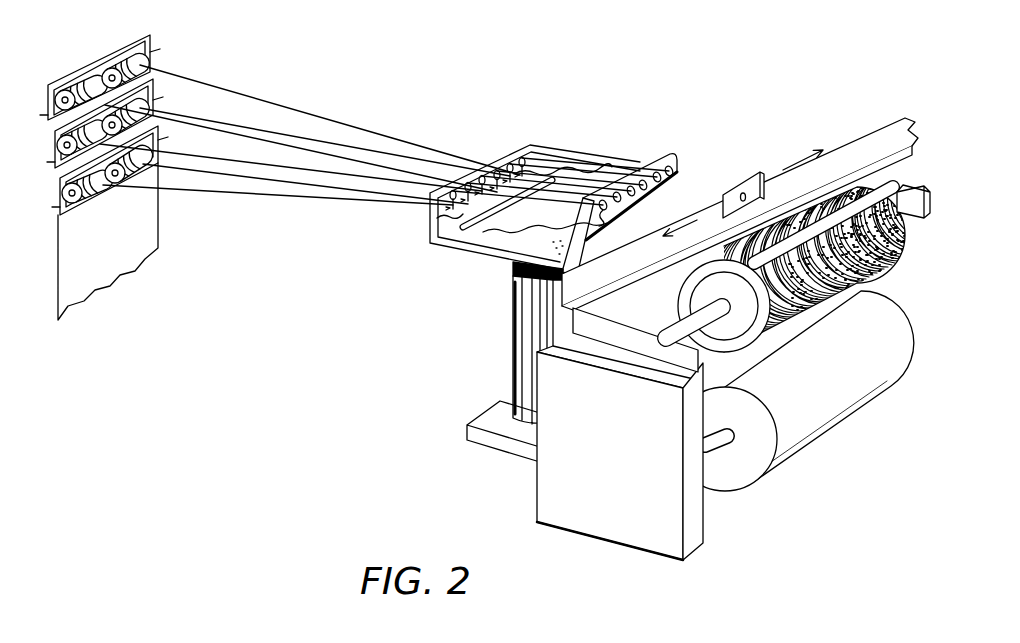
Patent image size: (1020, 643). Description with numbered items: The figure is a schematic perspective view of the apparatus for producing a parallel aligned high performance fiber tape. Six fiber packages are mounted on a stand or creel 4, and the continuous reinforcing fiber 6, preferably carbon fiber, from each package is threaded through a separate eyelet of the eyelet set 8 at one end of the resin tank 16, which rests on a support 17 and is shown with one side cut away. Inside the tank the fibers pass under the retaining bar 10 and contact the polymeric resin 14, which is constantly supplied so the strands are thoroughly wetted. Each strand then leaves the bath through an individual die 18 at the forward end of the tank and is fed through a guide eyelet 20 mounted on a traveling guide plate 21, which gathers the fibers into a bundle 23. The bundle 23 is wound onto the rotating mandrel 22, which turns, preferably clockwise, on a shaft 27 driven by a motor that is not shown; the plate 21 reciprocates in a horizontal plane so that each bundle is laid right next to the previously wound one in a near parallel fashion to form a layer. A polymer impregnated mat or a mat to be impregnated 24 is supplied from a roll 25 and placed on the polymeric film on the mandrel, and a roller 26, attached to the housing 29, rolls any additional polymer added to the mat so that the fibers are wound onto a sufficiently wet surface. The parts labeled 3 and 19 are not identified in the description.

The yarn packages 3 is at (120, 62).
The stand or creel 4 is at (158, 211).
The high performance reinforcing continuous fiber 6 is at (247, 97).
The eyelet set 8 is at (493, 187).
The retaining bar 10 is at (552, 182).
The polymeric resin 14 is at (447, 227).
The resin tank 16 is at (443, 247).
The support 17 is at (513, 327).
The die 18 is at (642, 166).
The guide eyelet 19 is at (606, 232).
The guide eyelet 20 is at (742, 195).
The traveling guide plate 21 is at (760, 183).
The mandrel 22 is at (830, 261).
The fiber bundle 23 is at (773, 197).
The mat 24 is at (903, 237).
The roll 25 is at (833, 425).
The roller 26 is at (893, 184).
The shaft 27 is at (673, 327).
The housing 29 is at (588, 540).